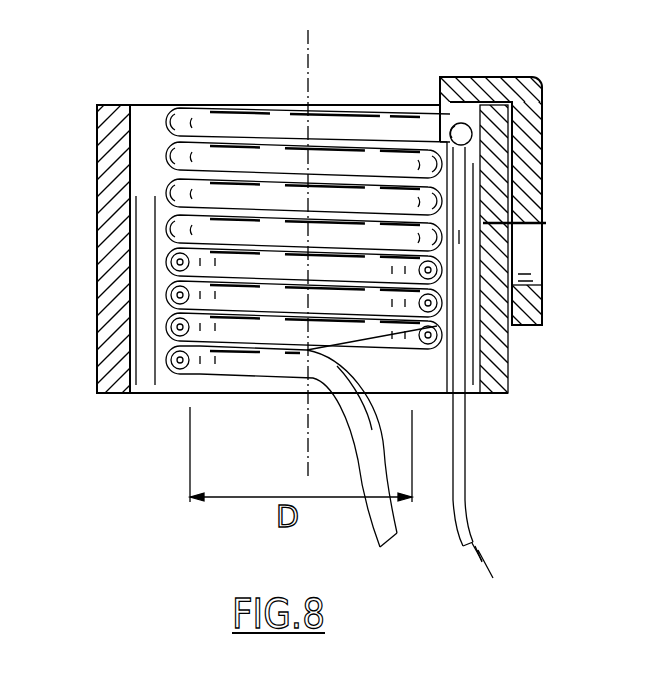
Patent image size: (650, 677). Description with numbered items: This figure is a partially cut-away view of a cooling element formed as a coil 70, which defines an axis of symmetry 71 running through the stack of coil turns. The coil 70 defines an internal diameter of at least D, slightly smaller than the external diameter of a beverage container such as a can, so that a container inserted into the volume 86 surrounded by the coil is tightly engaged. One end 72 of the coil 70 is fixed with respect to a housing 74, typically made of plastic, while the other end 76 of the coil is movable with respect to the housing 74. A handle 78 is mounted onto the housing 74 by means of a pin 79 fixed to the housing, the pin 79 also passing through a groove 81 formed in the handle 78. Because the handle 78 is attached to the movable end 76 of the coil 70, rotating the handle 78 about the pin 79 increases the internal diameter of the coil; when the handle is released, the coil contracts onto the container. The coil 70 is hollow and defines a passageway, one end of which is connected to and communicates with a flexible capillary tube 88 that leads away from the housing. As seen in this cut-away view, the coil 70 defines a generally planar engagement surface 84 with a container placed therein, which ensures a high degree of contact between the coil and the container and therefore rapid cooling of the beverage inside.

The coil 70 is at (410, 120).
The axis of symmetry 71 is at (306, 68).
The end of coil 72 is at (192, 382).
The housing 74 is at (100, 268).
The end of coil 76 is at (468, 120).
The handle 78 is at (546, 136).
The pin 79 is at (548, 224).
The groove 81 is at (538, 277).
The engagement surface 84 is at (307, 352).
The volume 86 is at (326, 98).
The flexible capillary tube 88 is at (466, 512).